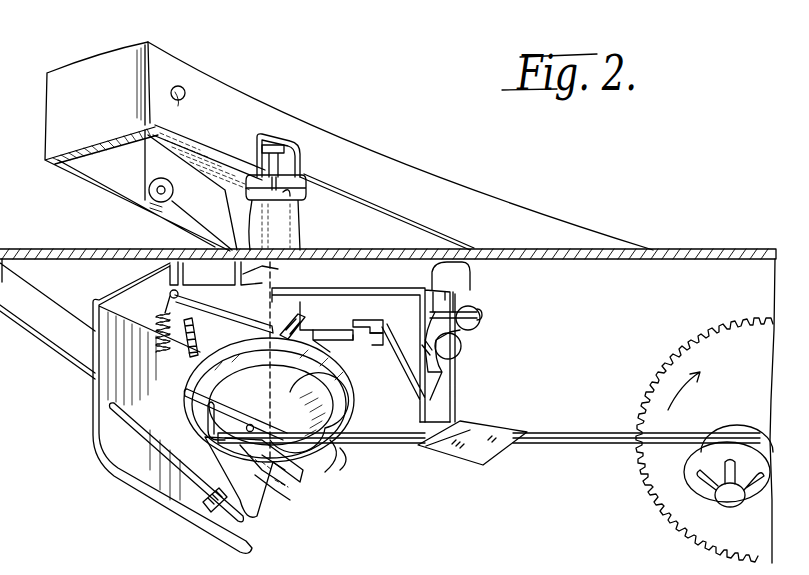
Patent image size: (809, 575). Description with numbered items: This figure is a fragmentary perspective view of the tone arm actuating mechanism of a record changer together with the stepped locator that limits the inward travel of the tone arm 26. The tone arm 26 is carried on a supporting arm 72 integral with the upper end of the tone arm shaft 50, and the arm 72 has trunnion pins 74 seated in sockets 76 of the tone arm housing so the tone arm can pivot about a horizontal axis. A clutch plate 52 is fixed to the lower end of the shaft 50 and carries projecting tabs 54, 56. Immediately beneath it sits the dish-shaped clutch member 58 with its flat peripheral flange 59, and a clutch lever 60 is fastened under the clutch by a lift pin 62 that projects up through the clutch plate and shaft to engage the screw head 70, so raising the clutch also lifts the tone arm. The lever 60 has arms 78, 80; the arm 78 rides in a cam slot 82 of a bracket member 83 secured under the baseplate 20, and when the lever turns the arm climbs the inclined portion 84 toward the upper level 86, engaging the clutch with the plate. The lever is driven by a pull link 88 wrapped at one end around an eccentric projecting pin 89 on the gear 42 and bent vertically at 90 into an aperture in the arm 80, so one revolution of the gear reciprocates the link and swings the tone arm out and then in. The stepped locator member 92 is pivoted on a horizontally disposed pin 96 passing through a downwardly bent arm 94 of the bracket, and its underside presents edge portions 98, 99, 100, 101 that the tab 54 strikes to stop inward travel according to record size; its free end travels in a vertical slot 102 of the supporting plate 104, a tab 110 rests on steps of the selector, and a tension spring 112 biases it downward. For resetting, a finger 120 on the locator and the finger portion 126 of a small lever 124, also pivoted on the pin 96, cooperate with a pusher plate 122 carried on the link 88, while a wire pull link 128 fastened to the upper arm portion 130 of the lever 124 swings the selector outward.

The baseplate 20 is at (52, 285).
The tone arm 26 is at (400, 165).
The gear 42 is at (716, 328).
The tone arm shaft 50 is at (300, 219).
The clutch plate 52 is at (352, 392).
The projecting tab 54 is at (337, 335).
The projecting tab 56 is at (272, 493).
The clutch member 58 is at (318, 460).
The flat peripheral flange 59 is at (343, 454).
The clutch lever 60 is at (270, 469).
The lift pin 62 is at (290, 165).
The screw head 70 is at (275, 150).
The supporting arm 72 is at (200, 165).
The trunnion pins 74 is at (184, 98).
The sockets 76 is at (173, 92).
The arm 78 is at (242, 503).
The arm 80 is at (187, 397).
The cam slot 82 is at (122, 447).
The bracket member 83 is at (446, 266).
The inclined portion 84 is at (200, 490).
The upper level 86 is at (133, 468).
The pull link 88 is at (553, 444).
The projecting pin 89 is at (720, 496).
The vertically bent end 90 is at (235, 410).
The stepped locator member 92 is at (318, 297).
The downwardly bent arm 94 is at (455, 297).
The horizontally disposed pin 96 is at (450, 347).
The edge portion 98 is at (278, 329).
The edge portion 99 is at (312, 323).
The edge portion 100 is at (347, 325).
The edge portion 101 is at (383, 340).
The vertical slot 102 is at (248, 322).
The supporting plate 104 is at (186, 356).
The horizontally projecting tab 110 is at (273, 271).
The tension spring 112 is at (155, 348).
The finger 120 is at (420, 396).
The pusher plate 122 is at (453, 407).
The small lever 124 is at (494, 330).
The finger portion 126 is at (460, 373).
The wire pull link 128 is at (436, 274).
The upper arm portion 130 is at (482, 310).